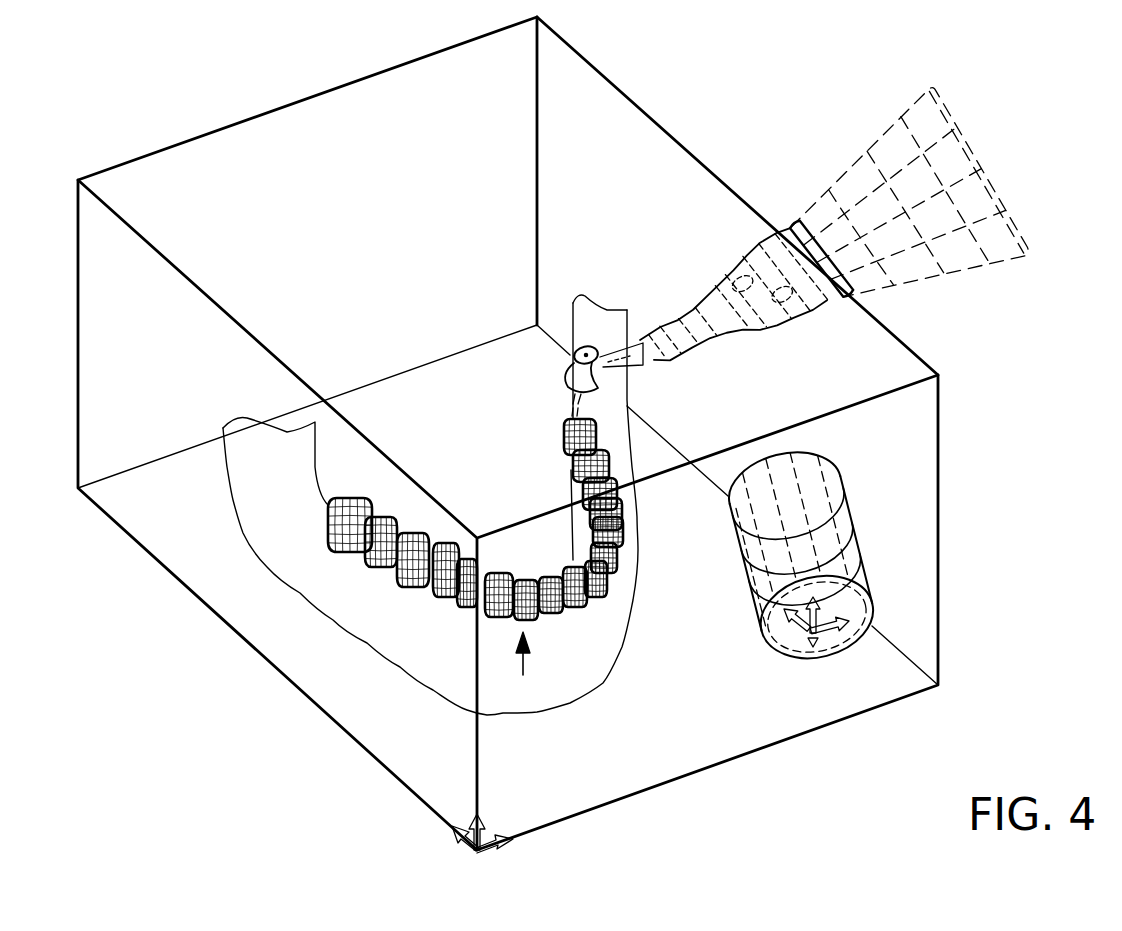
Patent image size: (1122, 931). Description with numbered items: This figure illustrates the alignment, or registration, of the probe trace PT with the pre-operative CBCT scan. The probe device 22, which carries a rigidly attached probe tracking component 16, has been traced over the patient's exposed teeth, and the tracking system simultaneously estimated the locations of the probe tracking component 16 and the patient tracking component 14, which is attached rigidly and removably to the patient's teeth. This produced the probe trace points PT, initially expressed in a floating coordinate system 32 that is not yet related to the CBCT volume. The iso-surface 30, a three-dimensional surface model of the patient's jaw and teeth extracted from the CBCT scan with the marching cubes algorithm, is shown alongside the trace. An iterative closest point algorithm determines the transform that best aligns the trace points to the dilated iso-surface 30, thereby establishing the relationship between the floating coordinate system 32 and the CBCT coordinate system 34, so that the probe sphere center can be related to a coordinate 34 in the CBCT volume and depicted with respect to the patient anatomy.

The patient tracking component 14 is at (843, 540).
The probe tracking component 16 is at (903, 150).
The probe device 22 is at (715, 310).
The iso-surface 30 is at (523, 672).
The floating coordinate system 32 is at (832, 632).
The CBCT coordinate system 34 is at (470, 850).
The probe trace PT is at (593, 597).